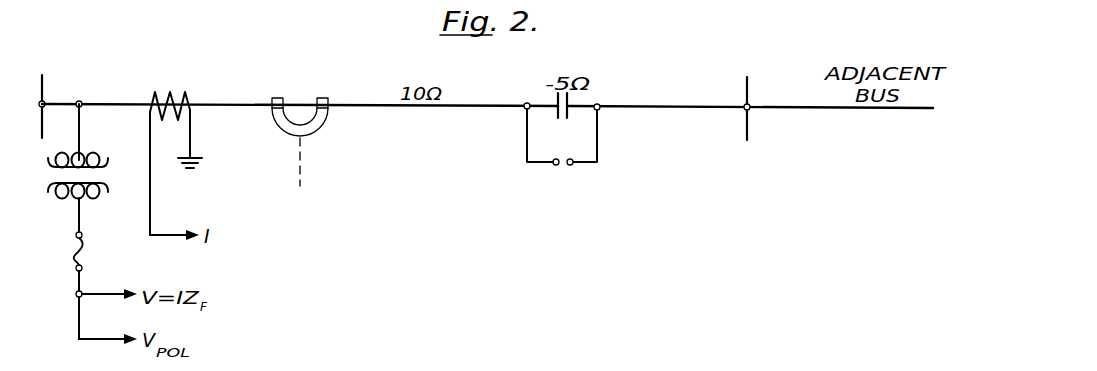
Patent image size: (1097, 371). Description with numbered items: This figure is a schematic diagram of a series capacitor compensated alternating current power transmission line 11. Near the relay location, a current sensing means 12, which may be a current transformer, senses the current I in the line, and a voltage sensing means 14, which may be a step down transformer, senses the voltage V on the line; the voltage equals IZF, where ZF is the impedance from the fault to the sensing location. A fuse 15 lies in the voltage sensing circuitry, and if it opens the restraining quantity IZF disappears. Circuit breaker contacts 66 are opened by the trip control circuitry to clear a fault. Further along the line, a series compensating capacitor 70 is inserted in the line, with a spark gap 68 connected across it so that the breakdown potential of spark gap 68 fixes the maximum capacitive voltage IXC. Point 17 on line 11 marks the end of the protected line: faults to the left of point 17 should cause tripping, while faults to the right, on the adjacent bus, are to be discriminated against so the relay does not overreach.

The line 11 is at (356, 104).
The current sensing means 12 is at (154, 91).
The voltage sensing means 14 is at (97, 179).
The fuse 15 is at (85, 253).
The point 17 is at (750, 122).
The circuit breaker contacts 66 is at (318, 130).
The spark gap 68 is at (563, 165).
The series compensating capacitor 70 is at (553, 100).